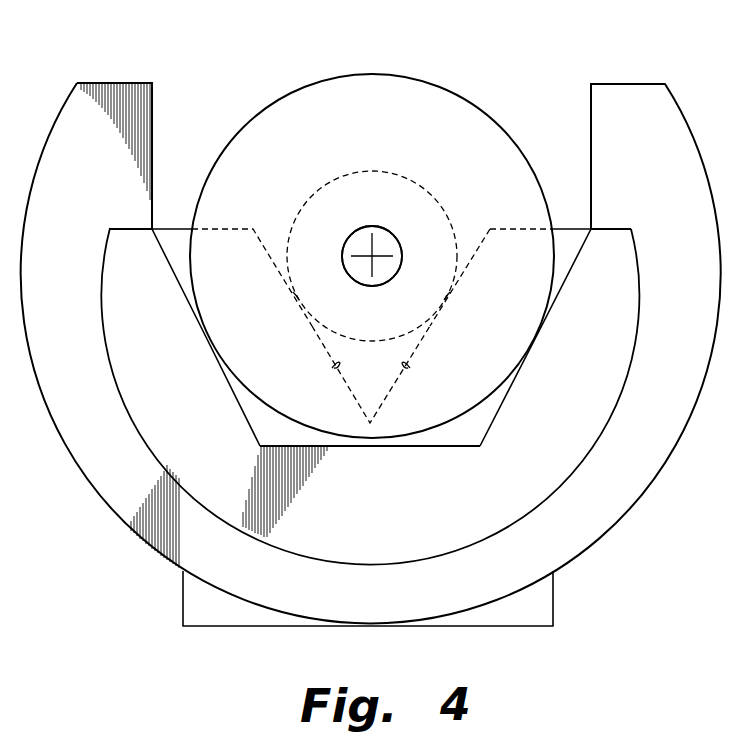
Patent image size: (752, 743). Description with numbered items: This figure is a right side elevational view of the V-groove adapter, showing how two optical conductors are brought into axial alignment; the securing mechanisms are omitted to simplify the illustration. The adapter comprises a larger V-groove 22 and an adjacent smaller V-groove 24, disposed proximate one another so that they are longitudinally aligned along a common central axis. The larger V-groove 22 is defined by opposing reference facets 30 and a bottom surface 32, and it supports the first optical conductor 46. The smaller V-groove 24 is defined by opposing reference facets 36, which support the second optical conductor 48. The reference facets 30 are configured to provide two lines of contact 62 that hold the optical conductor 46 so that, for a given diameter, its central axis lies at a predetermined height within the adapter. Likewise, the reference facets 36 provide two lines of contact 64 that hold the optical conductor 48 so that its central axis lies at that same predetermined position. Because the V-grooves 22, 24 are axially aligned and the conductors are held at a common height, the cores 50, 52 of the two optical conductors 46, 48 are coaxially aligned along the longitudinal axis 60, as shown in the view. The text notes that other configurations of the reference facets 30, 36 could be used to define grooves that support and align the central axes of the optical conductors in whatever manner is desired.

The larger V-groove 22 is at (185, 205).
The smaller V-groove 24 is at (281, 210).
The reference facets 30 is at (170, 251).
The bottom surface 32 is at (407, 447).
The reference facets 36 is at (338, 362).
The optical conductor 46 is at (404, 76).
The optical conductor 48 is at (376, 170).
The core 50 is at (395, 232).
The core 52 is at (395, 232).
The longitudinal axis 60 is at (372, 256).
The lines of contact 62 is at (205, 340).
The lines of contact 64 is at (296, 296).